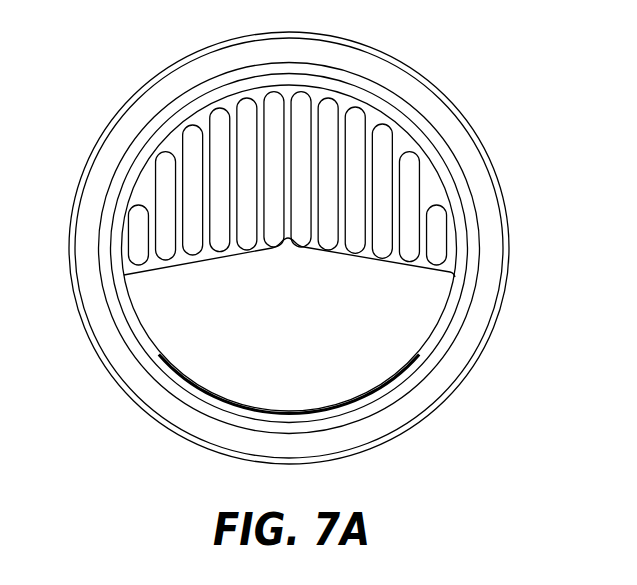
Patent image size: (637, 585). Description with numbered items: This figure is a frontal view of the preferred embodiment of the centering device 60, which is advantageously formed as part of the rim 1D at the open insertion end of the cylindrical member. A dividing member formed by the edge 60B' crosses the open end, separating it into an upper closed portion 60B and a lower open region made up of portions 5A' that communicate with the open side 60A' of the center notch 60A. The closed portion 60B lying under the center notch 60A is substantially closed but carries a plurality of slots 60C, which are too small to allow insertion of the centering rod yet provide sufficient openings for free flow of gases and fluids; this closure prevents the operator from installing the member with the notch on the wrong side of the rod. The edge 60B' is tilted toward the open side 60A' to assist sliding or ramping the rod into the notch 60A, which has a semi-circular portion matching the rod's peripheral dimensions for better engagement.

The rim 1D is at (373, 48).
The centering device 60 is at (95, 124).
The portions in communication with open side of center notch 5A' is at (251, 249).
The closed portion 60B is at (321, 178).
The slots 60C is at (412, 173).
The edge 60B' is at (241, 291).
The center notch 60A is at (314, 273).
The open side of notch 60A' is at (259, 283).